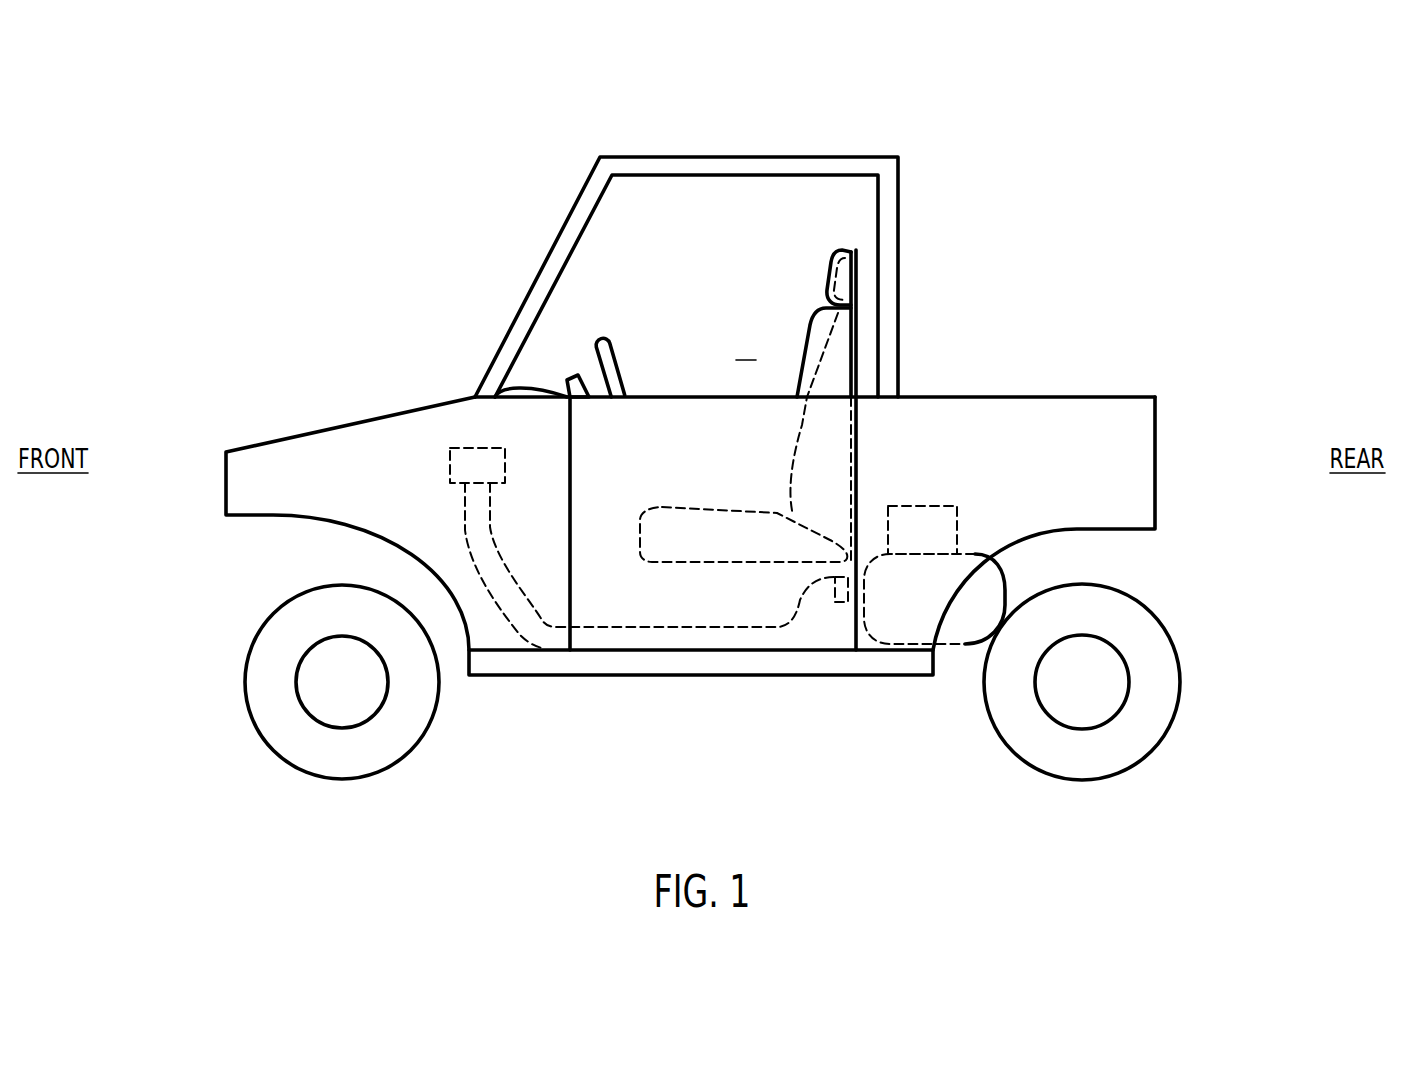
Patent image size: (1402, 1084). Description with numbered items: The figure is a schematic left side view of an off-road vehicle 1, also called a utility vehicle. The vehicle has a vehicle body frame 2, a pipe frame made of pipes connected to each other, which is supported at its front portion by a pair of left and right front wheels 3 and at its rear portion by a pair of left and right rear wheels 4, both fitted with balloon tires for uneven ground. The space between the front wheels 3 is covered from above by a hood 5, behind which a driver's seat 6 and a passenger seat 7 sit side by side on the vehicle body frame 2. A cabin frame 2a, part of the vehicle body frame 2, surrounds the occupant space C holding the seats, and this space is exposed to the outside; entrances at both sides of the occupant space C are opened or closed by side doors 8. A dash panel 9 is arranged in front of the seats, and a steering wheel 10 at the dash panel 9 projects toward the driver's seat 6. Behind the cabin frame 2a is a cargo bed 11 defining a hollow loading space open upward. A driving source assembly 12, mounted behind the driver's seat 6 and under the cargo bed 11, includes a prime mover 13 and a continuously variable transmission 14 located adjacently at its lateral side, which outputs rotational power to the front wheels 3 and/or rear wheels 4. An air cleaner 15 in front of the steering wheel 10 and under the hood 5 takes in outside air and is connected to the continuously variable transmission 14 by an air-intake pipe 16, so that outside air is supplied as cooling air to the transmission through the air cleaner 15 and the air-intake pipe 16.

The off-road vehicle 1 is at (391, 200).
The vehicle body frame 2 is at (567, 680).
The cabin frame 2a is at (576, 203).
The front wheels 3 is at (245, 667).
The rear wheels 4 is at (1180, 668).
The hood 5 is at (317, 427).
The driver's seat 6 is at (813, 340).
The passenger seat 7 is at (827, 273).
The side doors 8 is at (667, 608).
The dash panel 9 is at (530, 387).
The steering wheel 10 is at (597, 343).
The cargo bed 11 is at (1099, 395).
The driving source assembly 12 is at (953, 291).
The prime mover 13 is at (926, 505).
The continuously variable transmission 14 is at (1003, 589).
The air cleaner 15 is at (450, 470).
The air-intake pipe 16 is at (840, 602).
The occupant space C is at (746, 346).